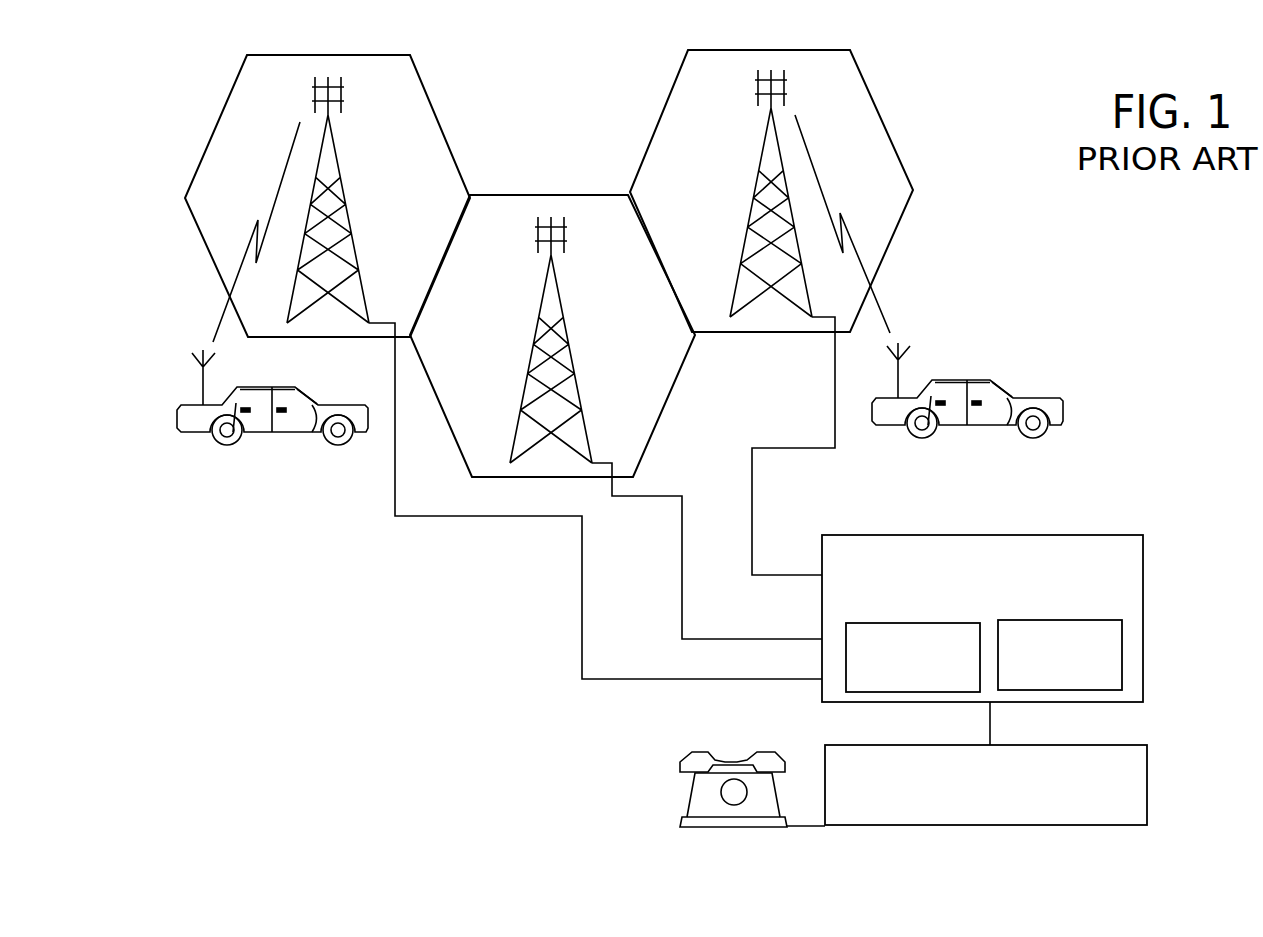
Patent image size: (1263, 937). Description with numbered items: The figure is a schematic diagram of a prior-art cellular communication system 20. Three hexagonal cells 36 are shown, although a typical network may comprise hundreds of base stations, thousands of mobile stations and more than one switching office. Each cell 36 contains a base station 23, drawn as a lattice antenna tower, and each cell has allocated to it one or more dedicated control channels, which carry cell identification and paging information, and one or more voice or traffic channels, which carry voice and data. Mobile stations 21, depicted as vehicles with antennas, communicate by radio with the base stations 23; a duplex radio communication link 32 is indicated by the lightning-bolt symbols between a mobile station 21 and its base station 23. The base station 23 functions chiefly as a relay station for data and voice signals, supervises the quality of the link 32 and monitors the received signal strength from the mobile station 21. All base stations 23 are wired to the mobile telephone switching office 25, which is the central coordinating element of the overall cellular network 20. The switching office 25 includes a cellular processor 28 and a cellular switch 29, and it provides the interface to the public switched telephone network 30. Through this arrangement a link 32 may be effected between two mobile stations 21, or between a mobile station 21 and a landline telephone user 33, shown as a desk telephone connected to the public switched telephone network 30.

The cellular communication system 20 is at (565, 242).
The cell 36 is at (227, 100).
The base station 23 is at (357, 172).
The duplex radio communication link 32 is at (285, 177).
The mobile station 21 is at (293, 432).
The mobile telephone switching office 25 is at (982, 593).
The cellular processor 28 is at (868, 622).
The cellular switch 29 is at (1098, 617).
The public switched telephone network 30 is at (1082, 823).
The landline telephone user 33 is at (687, 805).